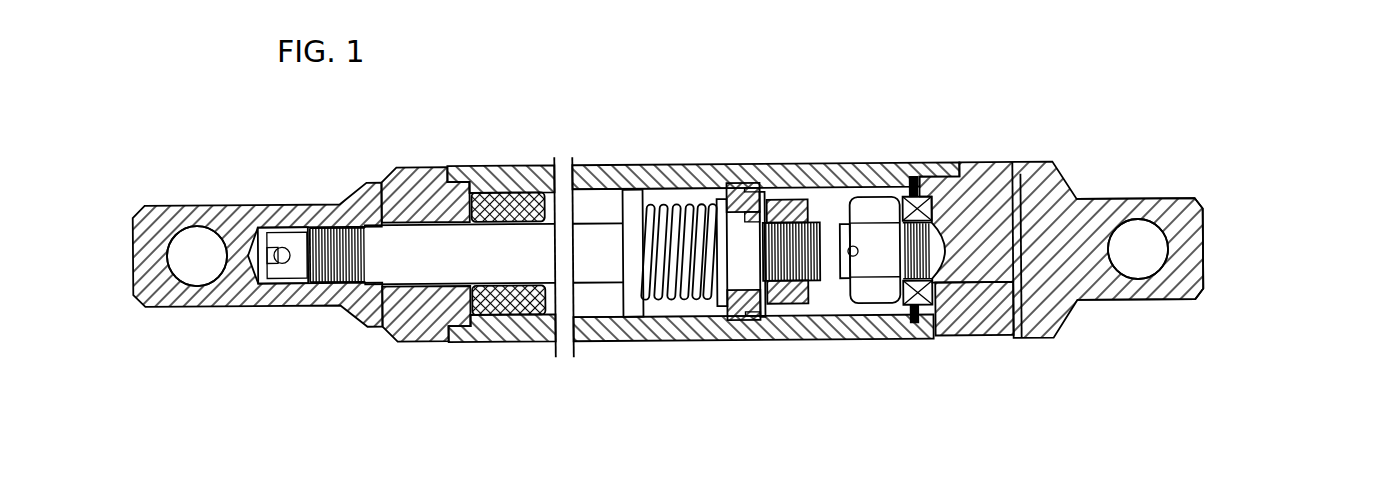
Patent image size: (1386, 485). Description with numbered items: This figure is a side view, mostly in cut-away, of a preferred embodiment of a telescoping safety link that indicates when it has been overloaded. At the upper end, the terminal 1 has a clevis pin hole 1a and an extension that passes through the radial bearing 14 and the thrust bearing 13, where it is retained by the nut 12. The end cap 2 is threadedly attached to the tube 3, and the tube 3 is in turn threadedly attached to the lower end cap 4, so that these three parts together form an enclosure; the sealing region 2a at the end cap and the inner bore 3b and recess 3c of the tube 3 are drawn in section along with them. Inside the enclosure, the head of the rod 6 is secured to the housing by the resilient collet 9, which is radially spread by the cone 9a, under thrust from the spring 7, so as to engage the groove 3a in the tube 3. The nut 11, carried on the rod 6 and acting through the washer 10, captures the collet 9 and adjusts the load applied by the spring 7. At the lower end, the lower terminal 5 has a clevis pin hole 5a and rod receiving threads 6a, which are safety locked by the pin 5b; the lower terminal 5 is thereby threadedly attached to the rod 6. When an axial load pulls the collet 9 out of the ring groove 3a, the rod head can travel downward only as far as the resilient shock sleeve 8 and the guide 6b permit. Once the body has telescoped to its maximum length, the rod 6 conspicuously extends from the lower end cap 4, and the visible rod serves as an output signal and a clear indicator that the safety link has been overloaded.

The terminal 1 is at (1144, 220).
The clevis pin hole 1a is at (1135, 218).
The end cap 2 is at (1056, 221).
The seal ring 2a is at (939, 218).
The tube 3 is at (704, 227).
The groove 3a is at (765, 216).
The housing bore 3b is at (666, 216).
The annular recess 3c is at (499, 220).
The lower end cap 4 is at (426, 216).
The lower terminal 5 is at (257, 221).
The clevis pin hole 5a is at (196, 217).
The pin 5b is at (277, 215).
The rod 6 is at (458, 302).
The rod receiving threads 6a is at (319, 308).
The guide 6b is at (623, 291).
The spring 7 is at (679, 296).
The resilient shock sleeve 8 is at (501, 303).
The resilient collet 9 is at (739, 295).
The cone 9a is at (728, 283).
The washer 10 is at (794, 299).
The nut 11 is at (821, 289).
The nut 12 is at (878, 303).
The thrust bearing 13 is at (941, 295).
The radial bearing 14 is at (977, 337).